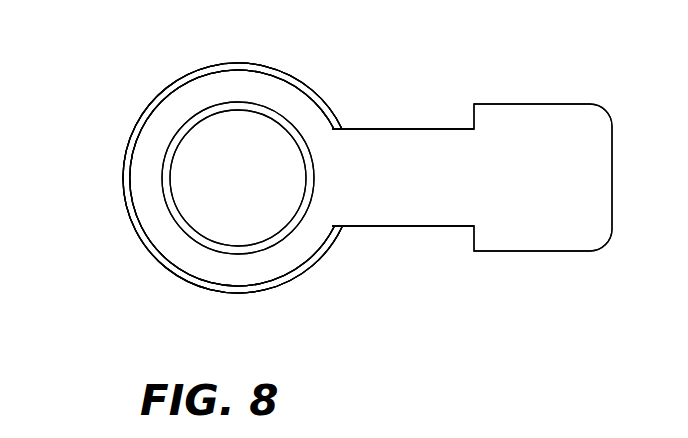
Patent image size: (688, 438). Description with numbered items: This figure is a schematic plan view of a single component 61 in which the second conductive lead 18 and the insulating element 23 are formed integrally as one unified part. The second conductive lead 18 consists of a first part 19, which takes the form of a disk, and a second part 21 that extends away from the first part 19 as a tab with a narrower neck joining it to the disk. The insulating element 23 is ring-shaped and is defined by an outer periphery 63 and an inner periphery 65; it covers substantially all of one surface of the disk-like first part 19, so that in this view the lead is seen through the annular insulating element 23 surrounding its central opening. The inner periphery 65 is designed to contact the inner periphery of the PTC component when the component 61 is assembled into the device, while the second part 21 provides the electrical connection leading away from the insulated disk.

The single component 61 is at (468, 57).
The insulating element 23 is at (293, 71).
The outer periphery 63 is at (138, 240).
The inner periphery 65 is at (210, 250).
The second part 21 is at (369, 213).
The first part 19 is at (288, 257).
The second conductive lead 18 is at (389, 258).